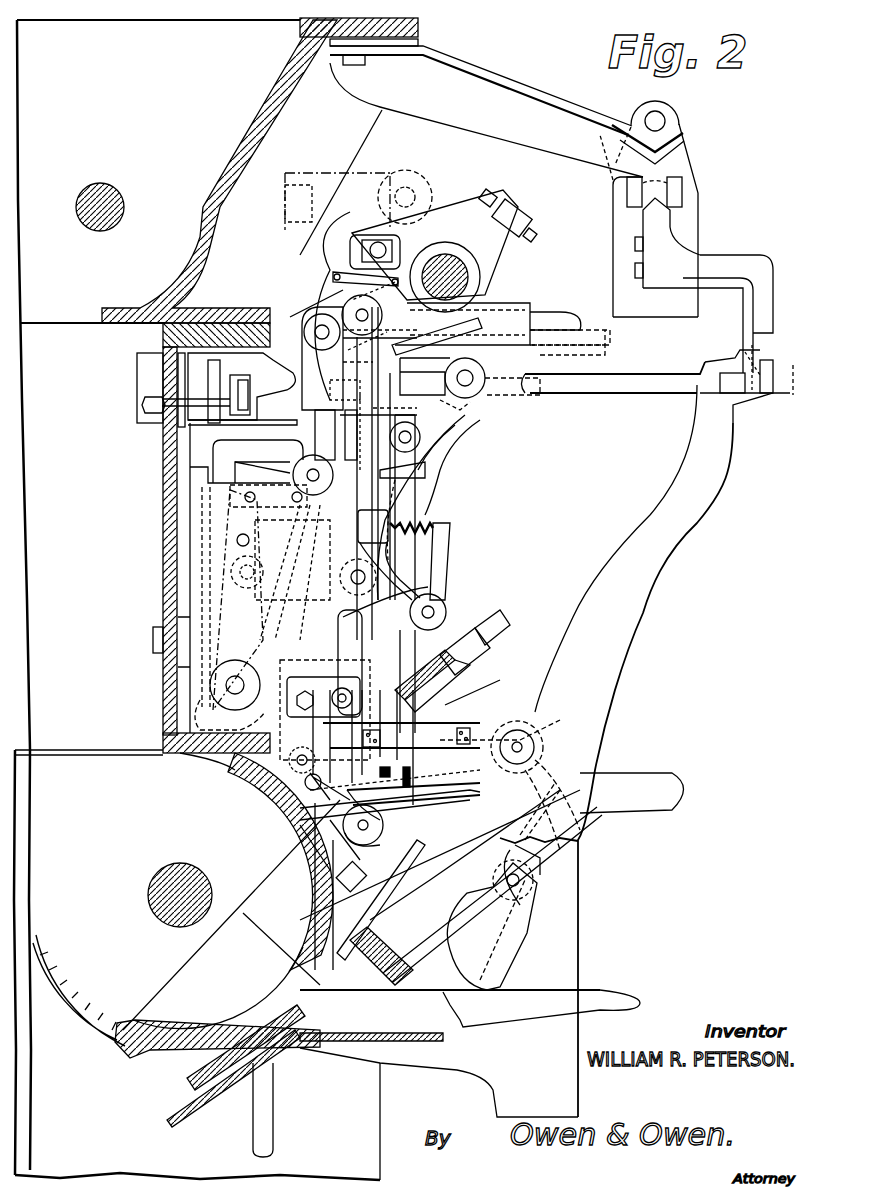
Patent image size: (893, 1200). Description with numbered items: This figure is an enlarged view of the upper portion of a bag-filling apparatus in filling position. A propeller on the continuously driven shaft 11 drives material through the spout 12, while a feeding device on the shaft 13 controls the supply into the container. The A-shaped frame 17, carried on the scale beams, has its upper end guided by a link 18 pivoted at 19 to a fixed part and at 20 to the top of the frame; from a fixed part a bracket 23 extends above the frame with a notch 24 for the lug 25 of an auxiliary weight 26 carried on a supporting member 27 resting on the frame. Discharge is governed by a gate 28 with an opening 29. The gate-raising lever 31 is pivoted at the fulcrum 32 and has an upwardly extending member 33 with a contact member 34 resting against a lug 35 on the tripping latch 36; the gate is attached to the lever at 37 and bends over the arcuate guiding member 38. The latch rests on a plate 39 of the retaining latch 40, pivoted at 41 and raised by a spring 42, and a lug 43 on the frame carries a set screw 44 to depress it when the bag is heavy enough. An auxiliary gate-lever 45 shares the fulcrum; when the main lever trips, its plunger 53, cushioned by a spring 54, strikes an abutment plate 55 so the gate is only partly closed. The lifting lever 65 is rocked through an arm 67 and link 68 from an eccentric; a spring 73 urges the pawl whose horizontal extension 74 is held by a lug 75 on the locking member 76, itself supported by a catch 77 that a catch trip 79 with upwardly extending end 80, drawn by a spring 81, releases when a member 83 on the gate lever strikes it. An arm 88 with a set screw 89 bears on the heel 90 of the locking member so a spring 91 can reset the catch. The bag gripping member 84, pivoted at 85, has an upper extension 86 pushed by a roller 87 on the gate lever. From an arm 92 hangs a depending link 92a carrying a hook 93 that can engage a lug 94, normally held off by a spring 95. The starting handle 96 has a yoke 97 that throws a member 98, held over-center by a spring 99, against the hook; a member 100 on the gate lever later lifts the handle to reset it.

The shaft 11 is at (150, 898).
The spout 12 is at (545, 1012).
The shaft 13 is at (120, 190).
The A-shaped frame 17 is at (578, 898).
The link 18 is at (640, 392).
The pivot 19 is at (262, 365).
The pivot 20 is at (775, 368).
The bracket 23 is at (505, 100).
The notch 24 is at (676, 121).
The lug 25 is at (666, 110).
The auxiliary weight 26 is at (690, 222).
The supporting member 27 is at (735, 262).
The gate 28 is at (190, 1102).
The opening 29 is at (280, 1085).
The gate-raising lever 31 is at (500, 700).
The fulcrum 32 is at (237, 676).
The upwardly extending member 33 is at (225, 600).
The contact member 34 is at (243, 472).
The lug 35 is at (305, 462).
The tripping latch 36 is at (365, 579).
The attachment point 37 is at (480, 845).
The arcuate guiding member 38 is at (428, 862).
The plate 39 is at (385, 754).
The retaining latch 40 is at (380, 838).
The pivot 41 is at (285, 808).
The spring 42 is at (413, 783).
The lug 43 is at (505, 720).
The set screw 44 is at (420, 780).
The auxiliary gate-lever 45 is at (265, 712).
The plunger 53 is at (365, 690).
The spring 54 is at (455, 655).
The abutment plate 55 is at (363, 830).
The lifting lever 65 is at (318, 325).
The arm 67 is at (440, 218).
The link 68 is at (295, 185).
The spring 73 is at (350, 252).
The horizontal extension 74 is at (475, 330).
The lug 75 is at (348, 372).
The locking member 76 is at (486, 375).
The catch 77 is at (390, 436).
The catch trip 79 is at (452, 467).
The upwardly extending end 80 is at (462, 420).
The spring 81 is at (345, 386).
The member 83 is at (395, 470).
The bag gripping member 84 is at (508, 950).
The pivot 85 is at (520, 880).
The upper extension 86 is at (540, 858).
The roller 87 is at (482, 785).
The arm 88 is at (495, 258).
The set screw 89 is at (500, 200).
The heel 90 is at (580, 312).
The spring 91 is at (447, 432).
The arm 92 is at (333, 280).
The depending link 92a is at (435, 478).
The hook 93 is at (378, 640).
The lug 94 is at (447, 612).
The spring 95 is at (413, 523).
The starting handle 96 is at (622, 786).
The yoke 97 is at (305, 840).
The member 98 is at (213, 774).
The spring 99 is at (290, 700).
The member 100 is at (535, 740).